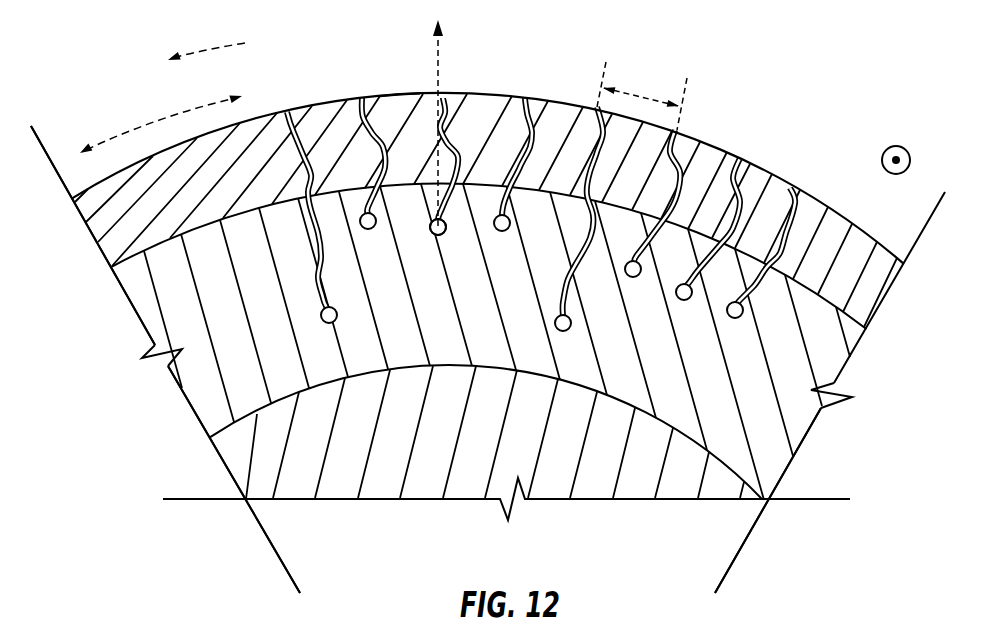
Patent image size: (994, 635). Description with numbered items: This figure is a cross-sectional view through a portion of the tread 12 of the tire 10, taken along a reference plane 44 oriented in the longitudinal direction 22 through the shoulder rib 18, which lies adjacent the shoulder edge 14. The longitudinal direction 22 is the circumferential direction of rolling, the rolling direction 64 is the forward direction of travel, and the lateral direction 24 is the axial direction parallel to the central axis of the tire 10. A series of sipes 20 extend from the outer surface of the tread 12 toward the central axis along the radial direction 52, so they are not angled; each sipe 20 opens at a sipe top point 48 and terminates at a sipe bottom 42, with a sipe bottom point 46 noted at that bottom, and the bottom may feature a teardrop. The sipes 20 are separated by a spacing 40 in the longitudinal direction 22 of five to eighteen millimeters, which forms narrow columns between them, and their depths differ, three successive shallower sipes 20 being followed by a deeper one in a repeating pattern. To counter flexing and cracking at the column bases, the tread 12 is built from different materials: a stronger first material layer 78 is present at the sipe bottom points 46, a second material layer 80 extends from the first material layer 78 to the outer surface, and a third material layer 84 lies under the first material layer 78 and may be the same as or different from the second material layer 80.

The tire 10 is at (836, 50).
The tread 12 is at (302, 110).
The shoulder edge 14 is at (776, 172).
The shoulder rib 18 is at (400, 94).
The sipe 20 is at (297, 277).
The longitudinal direction 22 is at (155, 118).
The lateral direction 24 is at (903, 147).
The spacing 40 is at (650, 85).
The sipe bottom 42 is at (446, 226).
The reference plane 44 is at (800, 430).
The sipe bottom point 46 is at (437, 235).
The sipe top point 48 is at (447, 95).
The radial direction 52 is at (440, 62).
The rolling direction 64 is at (212, 50).
The first material layer 78 is at (195, 401).
The second material layer 80 is at (107, 245).
The third material layer 84 is at (230, 457).